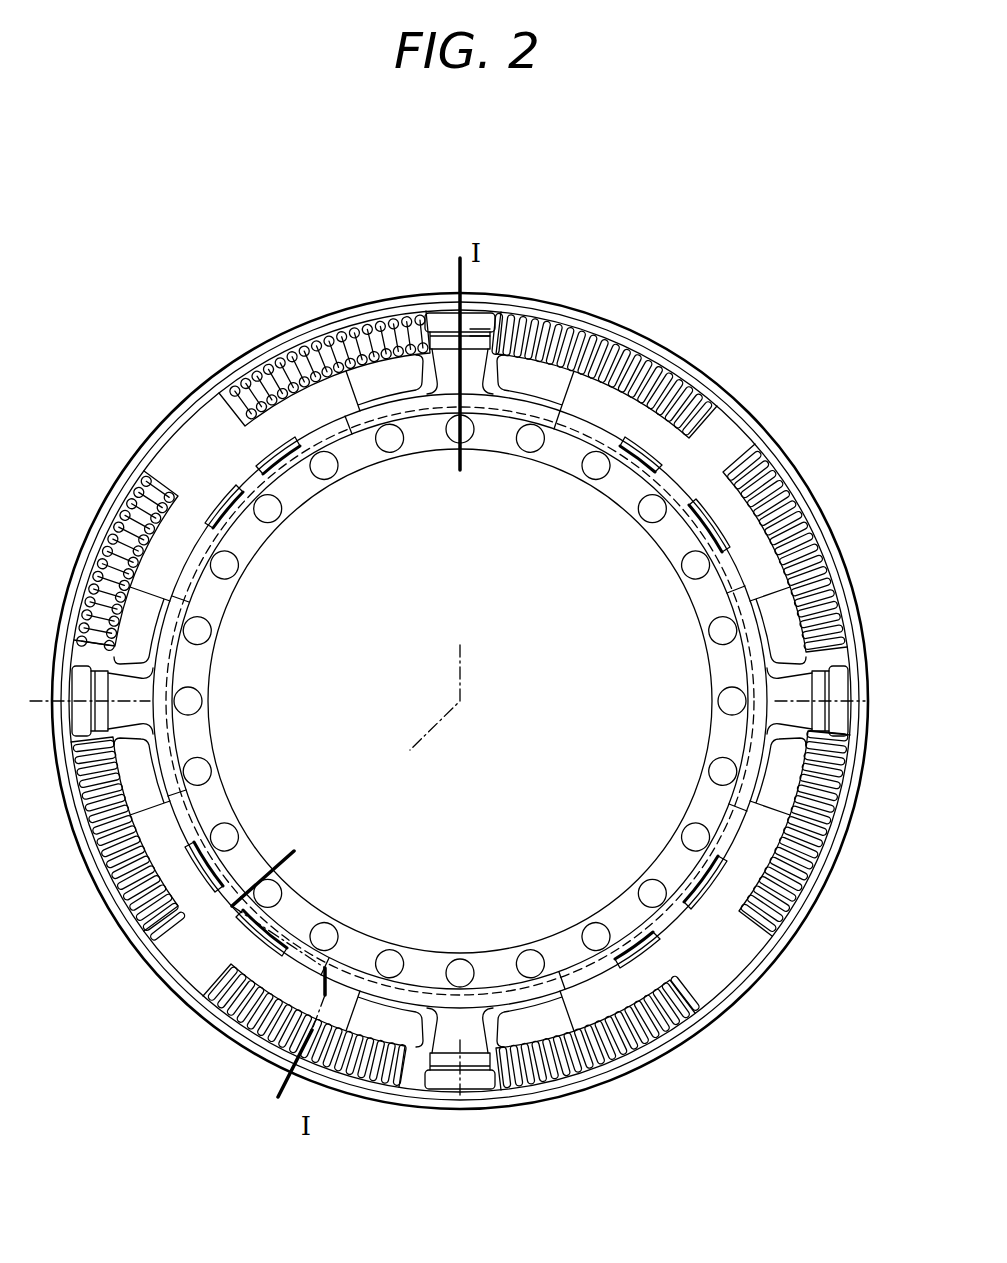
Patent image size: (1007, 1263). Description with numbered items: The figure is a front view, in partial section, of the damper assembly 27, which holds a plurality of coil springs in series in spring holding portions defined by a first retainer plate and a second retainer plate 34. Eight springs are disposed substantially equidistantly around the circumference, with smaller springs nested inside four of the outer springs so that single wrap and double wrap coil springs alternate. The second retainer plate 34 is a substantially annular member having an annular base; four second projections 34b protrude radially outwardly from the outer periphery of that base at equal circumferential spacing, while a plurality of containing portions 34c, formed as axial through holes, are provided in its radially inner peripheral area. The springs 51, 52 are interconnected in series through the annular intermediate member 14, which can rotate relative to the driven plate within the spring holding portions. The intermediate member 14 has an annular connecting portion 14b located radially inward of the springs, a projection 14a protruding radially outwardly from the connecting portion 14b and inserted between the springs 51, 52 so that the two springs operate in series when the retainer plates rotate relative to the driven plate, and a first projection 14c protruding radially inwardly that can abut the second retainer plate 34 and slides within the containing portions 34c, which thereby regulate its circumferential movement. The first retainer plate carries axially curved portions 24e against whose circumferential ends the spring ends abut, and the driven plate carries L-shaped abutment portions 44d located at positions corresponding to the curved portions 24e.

The damper assembly 27 is at (802, 423).
The intermediate member 14 is at (207, 426).
The projection 14a is at (180, 447).
The connecting portion 14b is at (302, 392).
The first projection 14c is at (262, 500).
The second retainer plate 34 is at (565, 392).
The second projection 34b is at (696, 425).
The containing portion 34c is at (292, 470).
The spring 51 is at (299, 328).
The spring 52 is at (115, 530).
The curved portion 24e is at (447, 320).
The abutment portion 44d is at (488, 322).